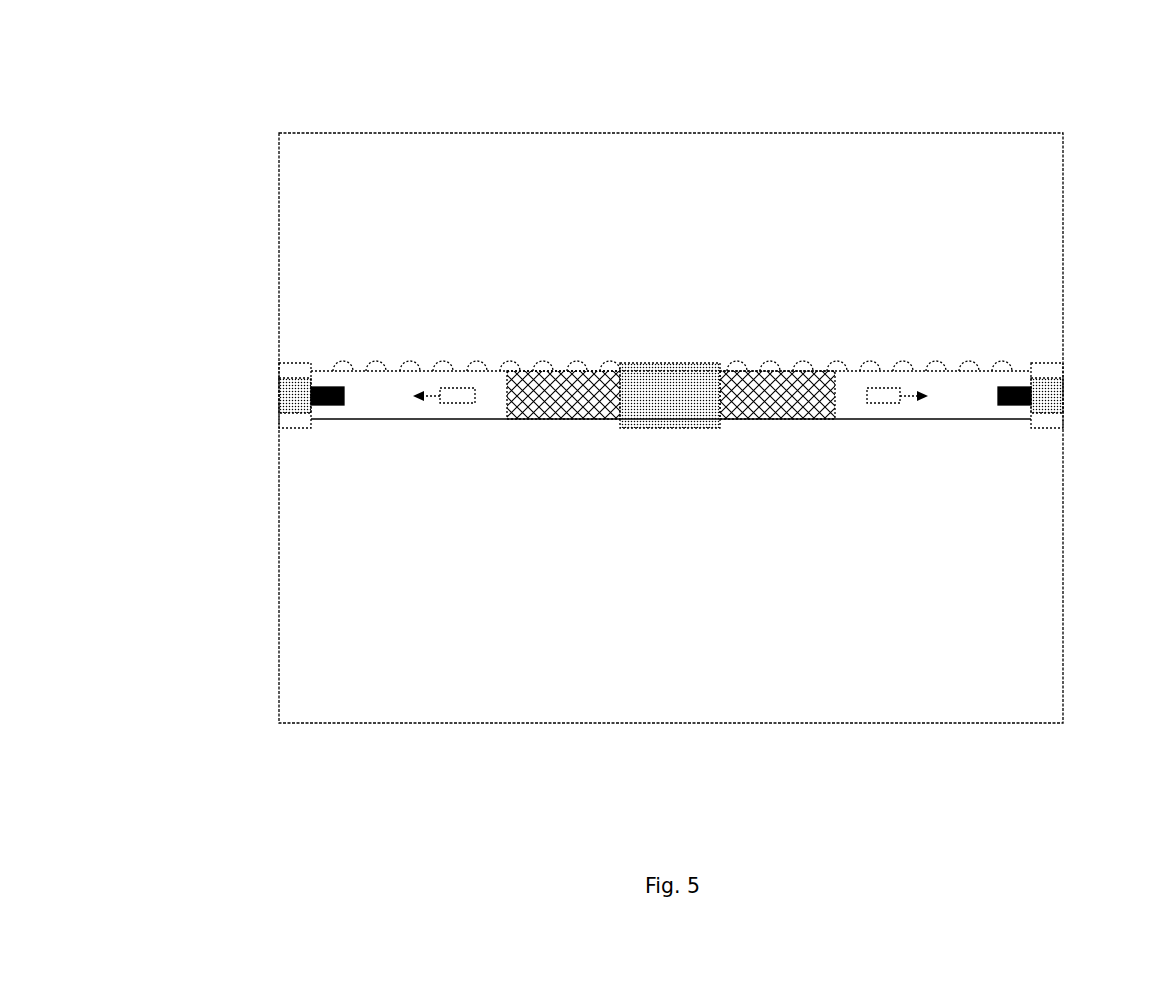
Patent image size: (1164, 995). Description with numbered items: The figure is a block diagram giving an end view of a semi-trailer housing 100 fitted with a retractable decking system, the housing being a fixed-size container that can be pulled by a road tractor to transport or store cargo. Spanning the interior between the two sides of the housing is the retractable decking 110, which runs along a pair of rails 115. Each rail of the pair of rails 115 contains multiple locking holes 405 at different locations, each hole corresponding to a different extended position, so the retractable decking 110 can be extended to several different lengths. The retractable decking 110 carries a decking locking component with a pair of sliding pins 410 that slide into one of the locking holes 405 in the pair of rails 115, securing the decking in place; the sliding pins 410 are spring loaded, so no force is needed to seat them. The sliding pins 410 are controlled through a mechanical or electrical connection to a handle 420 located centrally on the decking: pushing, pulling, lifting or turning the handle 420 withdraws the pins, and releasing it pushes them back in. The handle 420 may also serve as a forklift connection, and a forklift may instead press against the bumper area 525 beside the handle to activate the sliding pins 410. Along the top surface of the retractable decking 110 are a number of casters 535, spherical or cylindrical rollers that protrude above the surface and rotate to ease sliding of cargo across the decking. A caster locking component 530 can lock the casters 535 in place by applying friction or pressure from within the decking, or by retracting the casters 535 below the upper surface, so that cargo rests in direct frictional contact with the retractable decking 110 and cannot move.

The semi-trailer housing 100 is at (240, 76).
The pair of rails 115 is at (302, 350).
The casters 535 is at (841, 349).
The handle 420 is at (655, 362).
The bumper area 525 is at (782, 420).
The caster locking component 530 is at (458, 403).
The retractable decking 110 is at (912, 420).
The sliding pins 410 is at (1015, 405).
The locking holes 405 is at (1065, 392).